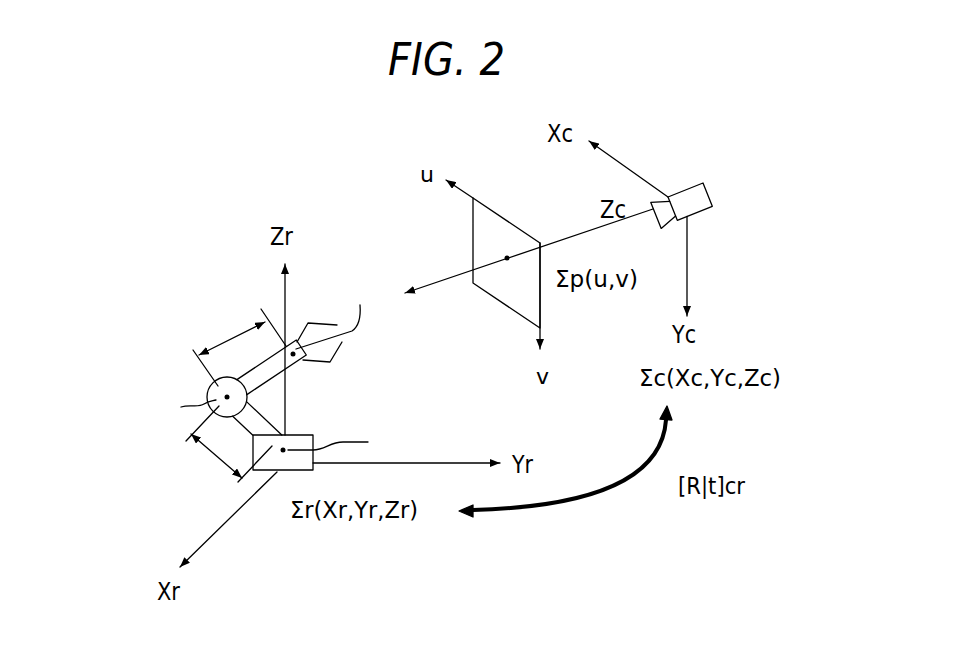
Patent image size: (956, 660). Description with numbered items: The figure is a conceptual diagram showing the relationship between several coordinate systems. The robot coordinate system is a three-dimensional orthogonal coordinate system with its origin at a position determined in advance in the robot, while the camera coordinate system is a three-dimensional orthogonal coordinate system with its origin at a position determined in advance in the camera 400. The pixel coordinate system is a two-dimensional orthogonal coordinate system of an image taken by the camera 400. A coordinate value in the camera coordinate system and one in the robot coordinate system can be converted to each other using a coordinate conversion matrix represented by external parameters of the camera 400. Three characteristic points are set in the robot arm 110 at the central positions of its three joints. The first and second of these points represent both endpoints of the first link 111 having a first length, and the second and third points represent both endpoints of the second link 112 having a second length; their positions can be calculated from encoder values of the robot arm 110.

The robot arm 110 is at (151, 286).
The first link 111 is at (280, 421).
The second link 112 is at (288, 368).
The camera 400 is at (706, 190).